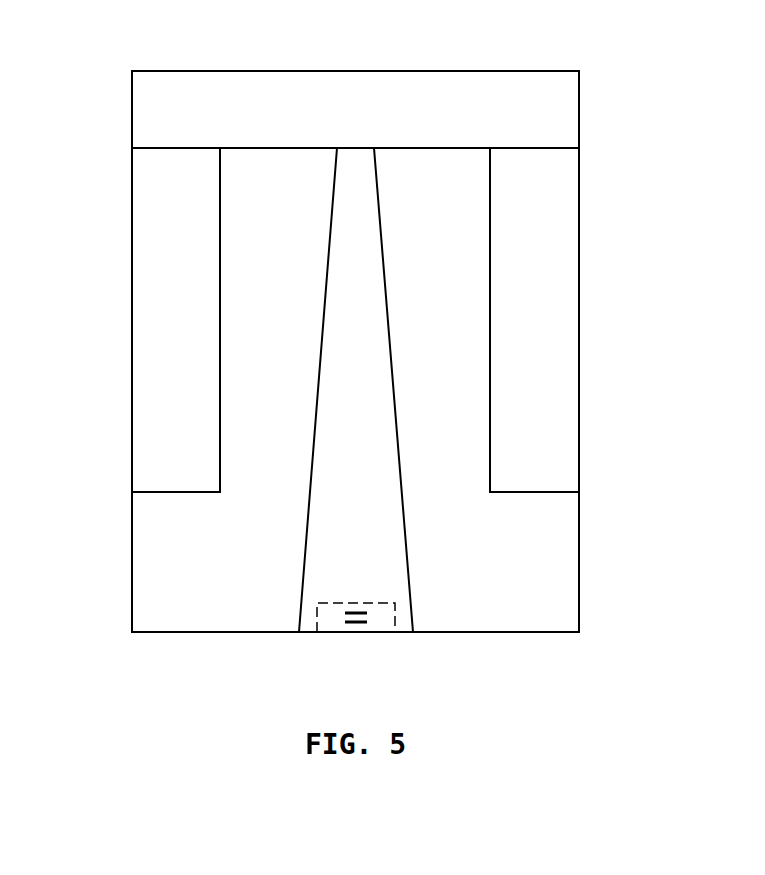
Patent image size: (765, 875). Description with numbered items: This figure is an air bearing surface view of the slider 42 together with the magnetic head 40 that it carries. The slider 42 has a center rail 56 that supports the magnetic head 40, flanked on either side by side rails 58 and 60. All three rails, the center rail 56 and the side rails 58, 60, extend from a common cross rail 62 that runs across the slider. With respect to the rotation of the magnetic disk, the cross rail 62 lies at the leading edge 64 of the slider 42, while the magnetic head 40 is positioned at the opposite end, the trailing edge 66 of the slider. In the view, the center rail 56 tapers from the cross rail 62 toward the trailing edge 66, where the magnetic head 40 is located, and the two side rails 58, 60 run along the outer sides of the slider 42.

The slider 42 is at (130, 579).
The cross rail 62 is at (274, 83).
The leading edge 64 is at (456, 72).
The side rail 58 is at (147, 230).
The side rail 60 is at (562, 232).
The center rail 56 is at (340, 265).
The magnetic head 40 is at (334, 626).
The trailing edge 66 is at (478, 632).